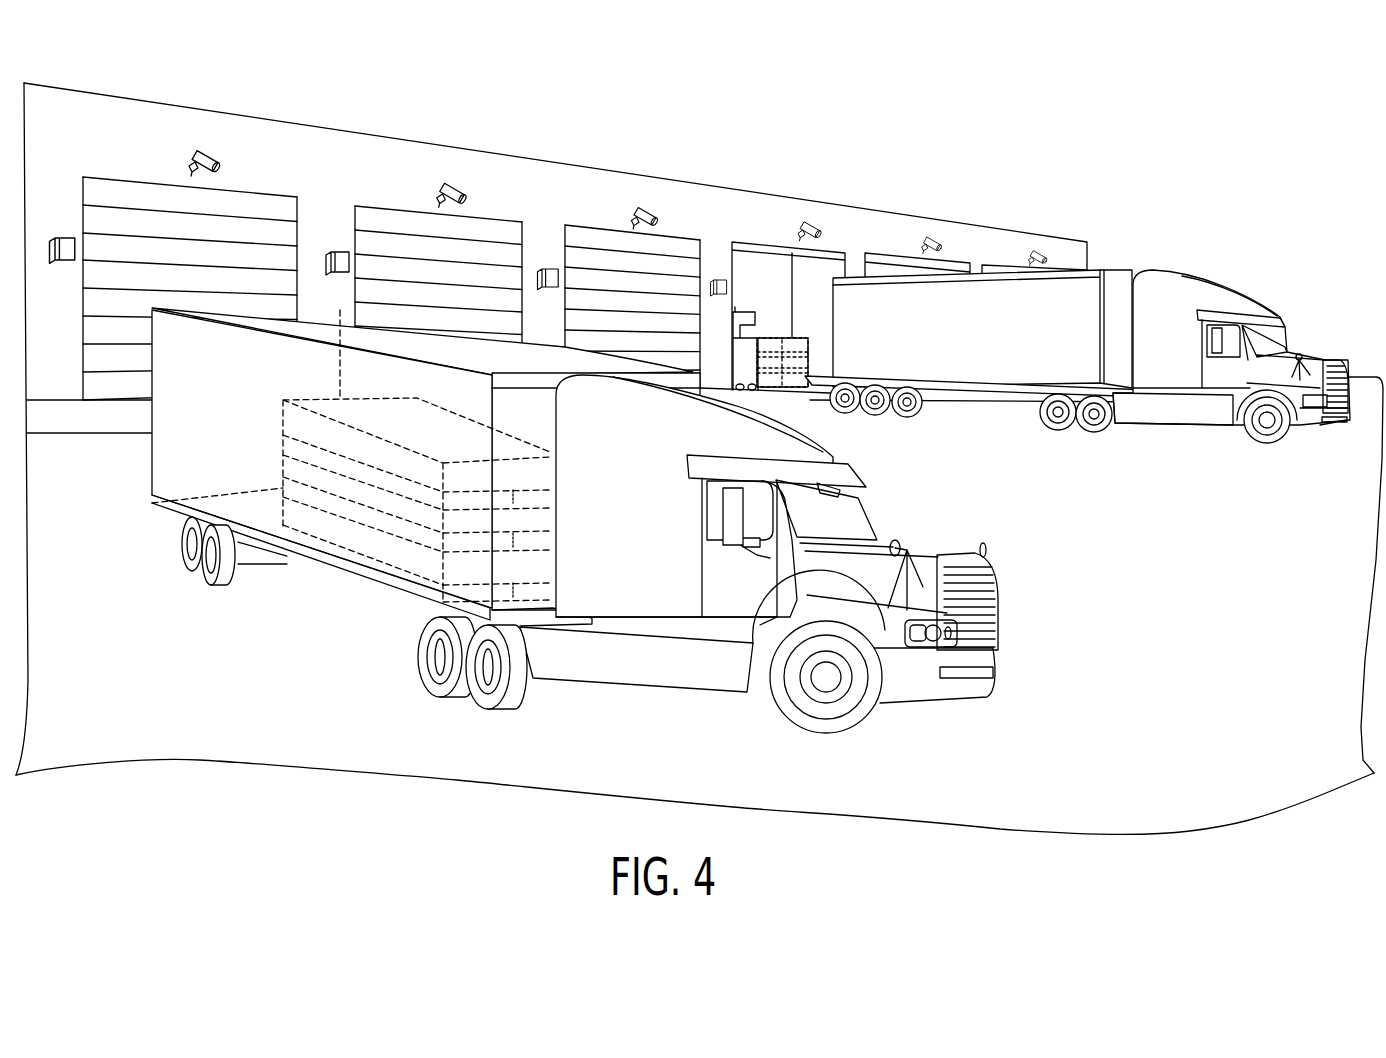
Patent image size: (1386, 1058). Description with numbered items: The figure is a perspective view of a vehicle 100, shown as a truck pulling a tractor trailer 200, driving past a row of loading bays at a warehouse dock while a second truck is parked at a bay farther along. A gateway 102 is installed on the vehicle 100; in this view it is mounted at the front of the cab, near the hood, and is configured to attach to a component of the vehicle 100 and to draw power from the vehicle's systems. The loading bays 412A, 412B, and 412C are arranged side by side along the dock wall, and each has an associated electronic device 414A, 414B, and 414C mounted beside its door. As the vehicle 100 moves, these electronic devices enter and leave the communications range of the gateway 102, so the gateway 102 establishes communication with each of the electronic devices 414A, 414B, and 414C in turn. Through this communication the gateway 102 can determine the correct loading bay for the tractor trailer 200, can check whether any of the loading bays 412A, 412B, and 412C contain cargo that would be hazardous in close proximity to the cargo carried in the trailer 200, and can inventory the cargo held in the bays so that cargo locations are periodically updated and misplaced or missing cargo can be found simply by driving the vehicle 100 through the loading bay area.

The vehicle 100 is at (708, 554).
The gateway 102 is at (865, 510).
The tractor trailer 200 is at (152, 475).
The loading bay 412A is at (255, 205).
The loading bay 412B is at (492, 222).
The loading bay 412C is at (683, 244).
The electronic device 414A is at (66, 245).
The electronic device 414B is at (340, 258).
The electronic device 414C is at (548, 272).